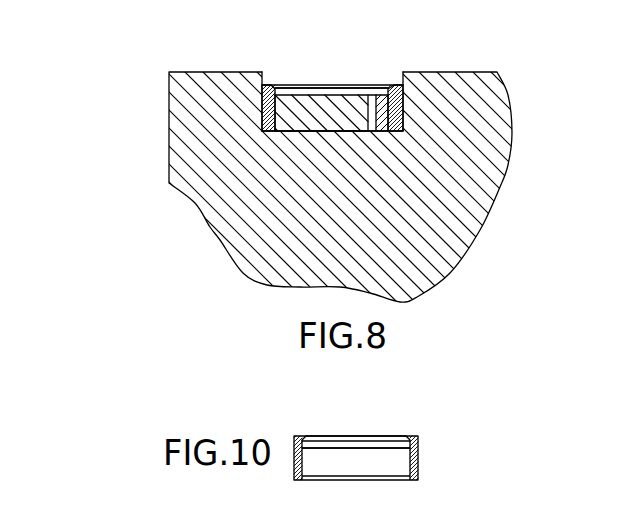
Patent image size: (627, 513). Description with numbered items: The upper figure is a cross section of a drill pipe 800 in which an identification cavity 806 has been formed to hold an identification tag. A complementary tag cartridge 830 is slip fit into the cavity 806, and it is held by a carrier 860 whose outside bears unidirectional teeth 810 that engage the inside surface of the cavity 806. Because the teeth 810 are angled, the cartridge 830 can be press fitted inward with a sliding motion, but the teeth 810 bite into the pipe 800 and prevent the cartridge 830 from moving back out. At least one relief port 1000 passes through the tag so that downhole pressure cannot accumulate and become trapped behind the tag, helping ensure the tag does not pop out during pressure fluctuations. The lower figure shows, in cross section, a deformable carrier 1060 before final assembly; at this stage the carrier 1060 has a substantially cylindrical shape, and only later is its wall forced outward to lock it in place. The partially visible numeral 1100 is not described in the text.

In FIG. 8, the drill pipe 800 is at (218, 72).
In FIG. 8, the identification cavity 806 is at (266, 131).
In FIG. 8, the unidirectional teeth 810 is at (398, 110).
In FIG. 8, the tag cartridge 830 is at (336, 98).
In FIG. 8, the carrier 860 is at (267, 85).
In FIG. 8, the relief port 1000 is at (397, 104).
In FIG. 10, the deformable carrier 1060 is at (356, 435).
In FIG. 10, the cap 1100 is at (353, 474).